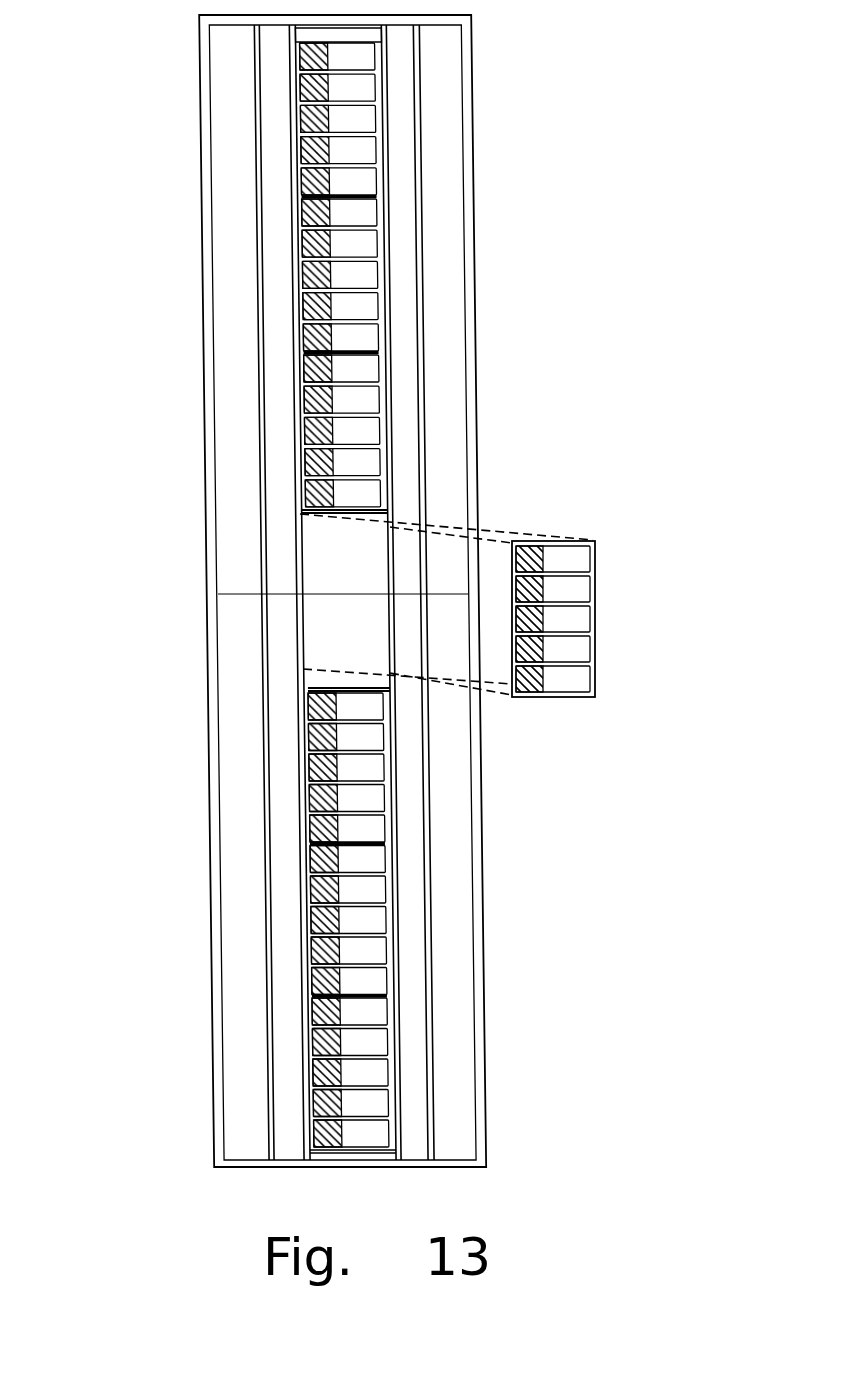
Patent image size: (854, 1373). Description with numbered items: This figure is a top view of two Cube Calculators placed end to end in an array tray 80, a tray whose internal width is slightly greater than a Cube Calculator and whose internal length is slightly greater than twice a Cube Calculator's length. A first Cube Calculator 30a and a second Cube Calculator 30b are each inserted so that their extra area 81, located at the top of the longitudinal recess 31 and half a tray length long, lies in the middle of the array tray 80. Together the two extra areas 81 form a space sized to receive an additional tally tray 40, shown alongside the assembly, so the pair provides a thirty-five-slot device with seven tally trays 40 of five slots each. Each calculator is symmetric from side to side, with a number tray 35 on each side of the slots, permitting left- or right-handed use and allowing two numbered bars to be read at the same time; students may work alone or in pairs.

The array tray 80 is at (203, 287).
The number tray 35 is at (277, 173).
The longitudinal recess 31 is at (307, 682).
The extra area 81 is at (333, 572).
The second Cube Calculator 30b is at (448, 445).
The first Cube Calculator 30a is at (448, 947).
The tally tray 40 is at (595, 617).